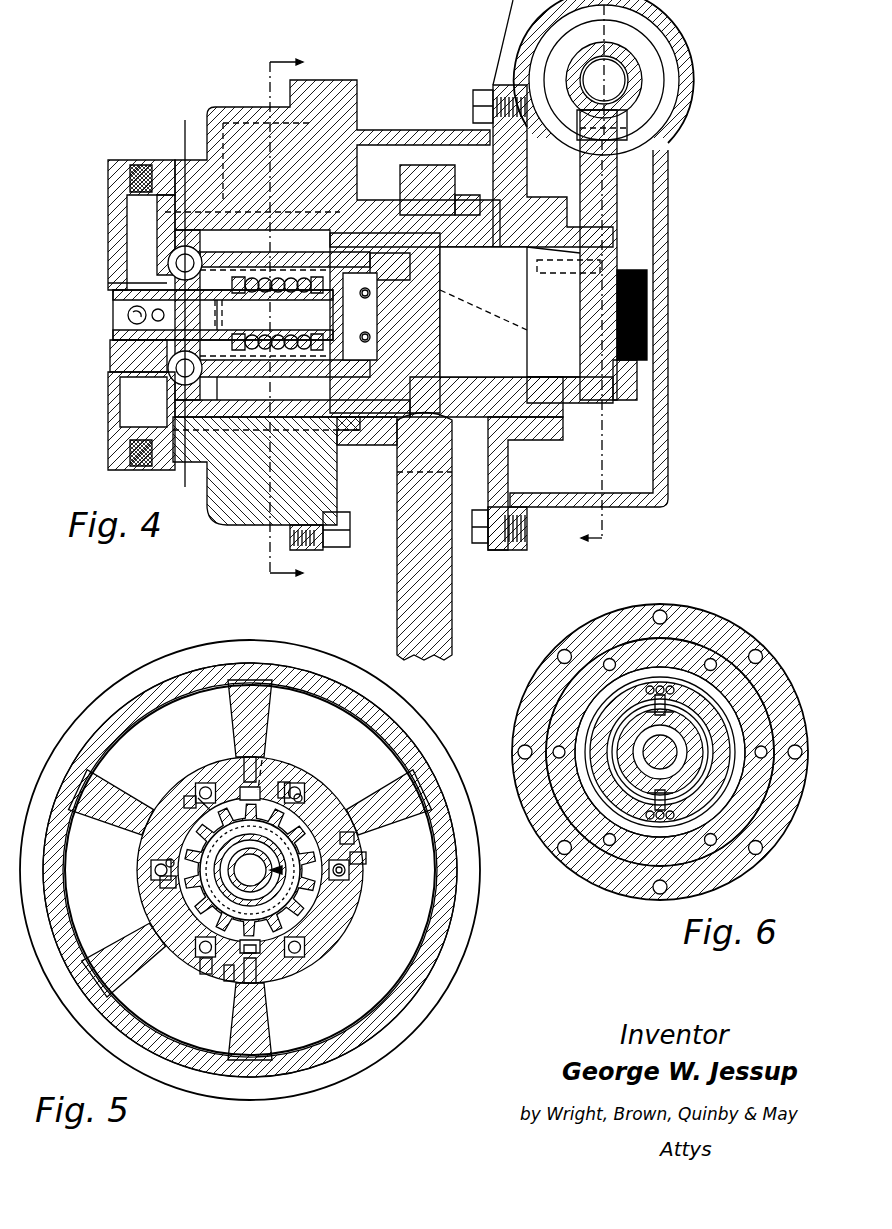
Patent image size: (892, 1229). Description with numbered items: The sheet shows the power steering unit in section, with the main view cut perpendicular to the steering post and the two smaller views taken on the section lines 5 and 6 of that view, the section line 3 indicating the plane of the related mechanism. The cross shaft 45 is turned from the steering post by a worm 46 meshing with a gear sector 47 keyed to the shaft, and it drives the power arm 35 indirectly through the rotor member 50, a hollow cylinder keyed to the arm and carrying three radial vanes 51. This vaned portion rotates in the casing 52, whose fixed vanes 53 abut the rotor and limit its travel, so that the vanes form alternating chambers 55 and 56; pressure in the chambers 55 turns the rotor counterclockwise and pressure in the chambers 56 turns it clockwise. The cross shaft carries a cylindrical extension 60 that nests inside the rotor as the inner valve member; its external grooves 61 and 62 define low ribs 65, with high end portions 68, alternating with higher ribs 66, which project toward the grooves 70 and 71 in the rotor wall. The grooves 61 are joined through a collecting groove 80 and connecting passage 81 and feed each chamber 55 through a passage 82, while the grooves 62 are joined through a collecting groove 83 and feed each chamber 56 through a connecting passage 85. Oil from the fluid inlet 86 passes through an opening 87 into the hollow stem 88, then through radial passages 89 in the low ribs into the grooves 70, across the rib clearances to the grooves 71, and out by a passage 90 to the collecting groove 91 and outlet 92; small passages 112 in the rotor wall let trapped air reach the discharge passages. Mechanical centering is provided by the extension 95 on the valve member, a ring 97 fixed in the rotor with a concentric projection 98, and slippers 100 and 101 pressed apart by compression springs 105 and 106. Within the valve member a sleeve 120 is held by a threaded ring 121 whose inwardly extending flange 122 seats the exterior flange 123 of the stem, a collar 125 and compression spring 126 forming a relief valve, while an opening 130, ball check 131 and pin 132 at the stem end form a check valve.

In FIG. 4, the section line 3 is at (582, 345).
In FIG. 4, the section line 5- 5 is at (293, 318).
In FIG. 4, the section line 6- 6 is at (183, 302).
In FIG. 4, the power arm 35 is at (440, 590).
In FIG. 4, the cross shaft 45 is at (574, 353).
In FIG. 4, the worm 46 is at (660, 78).
In FIG. 4, the gear sector 47 is at (606, 209).
In FIG. 4, the rotor member 50 is at (488, 420).
In FIG. 5, the rotor member 50 is at (150, 893).
In FIG. 6, the rotor member 50 is at (640, 653).
In FIG. 4, the radial vanes 51 is at (254, 483).
In FIG. 5, the radial vanes 51 is at (135, 787).
In FIG. 4, the casing 52 is at (215, 107).
In FIG. 5, the casing 52 is at (185, 680).
In FIG. 6, the casing 52 is at (712, 627).
In FIG. 5, the fixed vanes 53 is at (238, 699).
In FIG. 5, the chambers 55 is at (170, 713).
In FIG. 5, the chambers 56 is at (318, 707).
In FIG. 4, the cylindrical extension 60 is at (390, 298).
In FIG. 5, the longitudinal grooves 61 is at (284, 785).
In FIG. 5, the longitudinal grooves 62 is at (222, 790).
In FIG. 5, the ribs 65 is at (188, 960).
In FIG. 5, the ribs 66 is at (299, 790).
In FIG. 4, the high end portions 68 is at (446, 257).
In FIG. 5, the longitudinal grooves 70 is at (246, 786).
In FIG. 5, the longitudinal grooves 71 is at (204, 800).
In FIG. 4, the collecting groove 80 is at (356, 288).
In FIG. 4, the connecting passage 81 is at (320, 251).
In FIG. 5, the passage 82 is at (190, 800).
In FIG. 4, the collecting groove 83 is at (272, 260).
In FIG. 5, the collecting groove 83 is at (262, 950).
In FIG. 5, the connecting passage 85 is at (332, 800).
In FIG. 4, the fluid inlet 86 is at (132, 222).
In FIG. 4, the opening 87 is at (114, 287).
In FIG. 4, the hollow stem 88 is at (121, 343).
In FIG. 6, the hollow stem 88 is at (660, 752).
In FIG. 4, the radial passages 89 is at (375, 283).
In FIG. 5, the radial passages 89 is at (262, 760).
In FIG. 4, the passage 90 is at (258, 213).
In FIG. 5, the passage 90 is at (208, 787).
In FIG. 6, the passage 90 is at (606, 660).
In FIG. 4, the collecting groove 91 is at (162, 215).
In FIG. 4, the outlet 92 is at (133, 434).
In FIG. 6, the extension 95 is at (577, 717).
In FIG. 4, the ring 97 is at (173, 391).
In FIG. 6, the projection 98 is at (593, 767).
In FIG. 6, the slipper 100 is at (597, 783).
In FIG. 6, the slipper 101 is at (700, 737).
In FIG. 4, the compression spring 105 is at (160, 250).
In FIG. 6, the compression spring 105 is at (663, 683).
In FIG. 4, the compression spring 106 is at (176, 366).
In FIG. 6, the compression spring 106 is at (650, 813).
In FIG. 5, the small passages 112 is at (347, 872).
In FIG. 4, the sleeve 120 is at (287, 388).
In FIG. 4, the threaded ring 121 is at (232, 384).
In FIG. 4, the inwardly extending flange 122 is at (270, 263).
In FIG. 4, the exterior flange 123 is at (232, 298).
In FIG. 4, the collar 125 is at (364, 334).
In FIG. 4, the compression spring 126 is at (297, 292).
In FIG. 5, the compression spring 126 is at (250, 870).
In FIG. 4, the opening 130 is at (128, 313).
In FIG. 4, the ball check 131 is at (152, 316).
In FIG. 4, the pin 132 is at (168, 266).